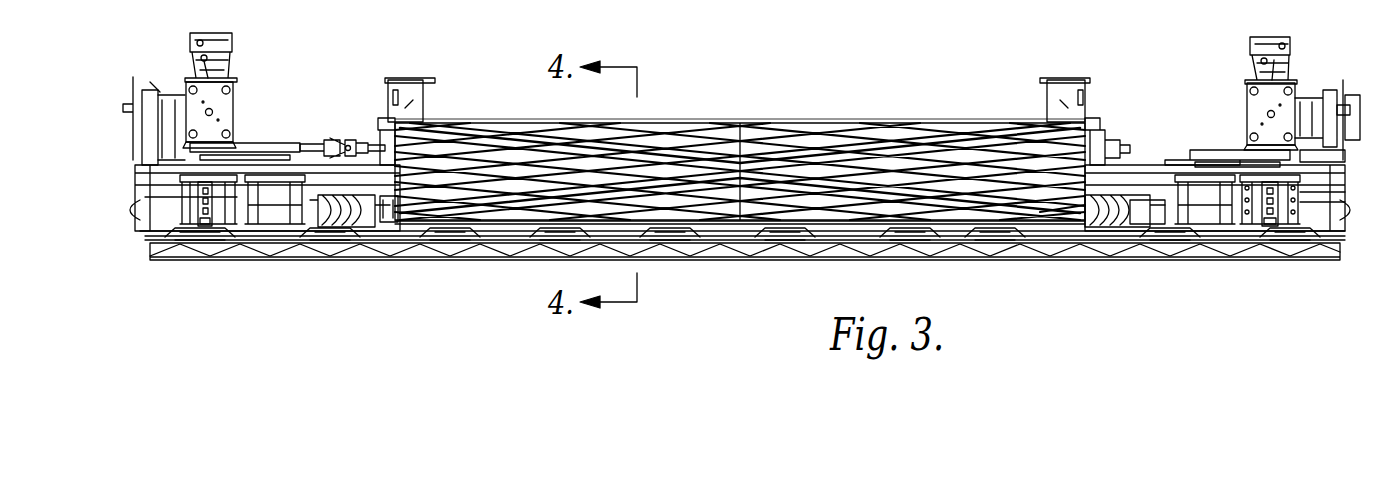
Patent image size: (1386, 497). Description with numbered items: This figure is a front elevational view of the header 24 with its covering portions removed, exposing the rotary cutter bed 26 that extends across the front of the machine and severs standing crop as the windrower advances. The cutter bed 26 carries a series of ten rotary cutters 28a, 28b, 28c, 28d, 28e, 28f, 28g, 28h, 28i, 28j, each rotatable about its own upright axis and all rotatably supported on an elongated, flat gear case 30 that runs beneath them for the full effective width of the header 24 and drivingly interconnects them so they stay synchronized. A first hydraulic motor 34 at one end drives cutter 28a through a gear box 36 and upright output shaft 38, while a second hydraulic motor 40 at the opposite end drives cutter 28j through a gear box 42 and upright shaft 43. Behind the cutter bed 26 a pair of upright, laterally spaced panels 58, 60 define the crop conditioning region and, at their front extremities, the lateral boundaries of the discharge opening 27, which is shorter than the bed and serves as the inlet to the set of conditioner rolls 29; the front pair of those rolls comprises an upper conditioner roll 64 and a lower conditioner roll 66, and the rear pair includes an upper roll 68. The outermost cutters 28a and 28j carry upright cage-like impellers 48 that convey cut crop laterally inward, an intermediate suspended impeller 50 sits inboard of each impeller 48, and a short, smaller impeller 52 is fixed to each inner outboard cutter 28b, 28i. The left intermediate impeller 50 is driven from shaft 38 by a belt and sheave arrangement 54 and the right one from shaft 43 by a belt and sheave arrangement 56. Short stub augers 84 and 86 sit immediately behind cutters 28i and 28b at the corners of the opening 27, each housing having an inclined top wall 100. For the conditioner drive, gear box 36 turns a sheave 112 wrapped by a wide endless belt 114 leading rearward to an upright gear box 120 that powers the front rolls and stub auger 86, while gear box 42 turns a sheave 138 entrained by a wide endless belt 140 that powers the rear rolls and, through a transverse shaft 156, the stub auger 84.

The header 24 is at (1360, 95).
The rotary cutter bed 26 is at (1333, 264).
The discharge opening 27 is at (1064, 210).
The rotary cutter 28a is at (1282, 232).
The rotary cutter 28b is at (1160, 232).
The rotary cutter 28c is at (990, 232).
The rotary cutter 28d is at (902, 232).
The rotary cutter 28e is at (778, 232).
The rotary cutter 28f is at (668, 232).
The rotary cutter 28g is at (548, 232).
The rotary cutter 28h is at (445, 232).
The rotary cutter 28i is at (330, 232).
The rotary cutter 28j is at (196, 230).
The conditioner rolls 29 is at (845, 113).
The gear case 30 is at (1258, 248).
The first hydraulic motor 34 is at (1270, 37).
The gear box 36 is at (1255, 118).
The upright output shaft 38 is at (1275, 208).
The second hydraulic motor 40 is at (205, 33).
The gear box 42 is at (233, 98).
The upright shaft 43 is at (200, 205).
The impeller 48 is at (182, 197).
The intermediate impeller 50 is at (268, 215).
The short impeller 52 is at (345, 218).
The belt and sheave arrangement 54 is at (1232, 152).
The belt and sheave arrangement 56 is at (245, 152).
The panel 58 is at (390, 88).
The panel 60 is at (1095, 80).
The upper conditioner roll 64 is at (718, 170).
The lower conditioner roll 66 is at (628, 205).
The upper roll 68 is at (692, 130).
The stub auger 84 is at (390, 215).
The stub auger 86 is at (1082, 228).
The inclined top wall 100 is at (1135, 168).
The sheave 112 is at (1330, 92).
The endless belt 114 is at (1300, 190).
The upright gear box 120 is at (1330, 152).
The sheave 138 is at (158, 97).
The endless belt 140 is at (155, 125).
The transverse shaft 156 is at (322, 145).